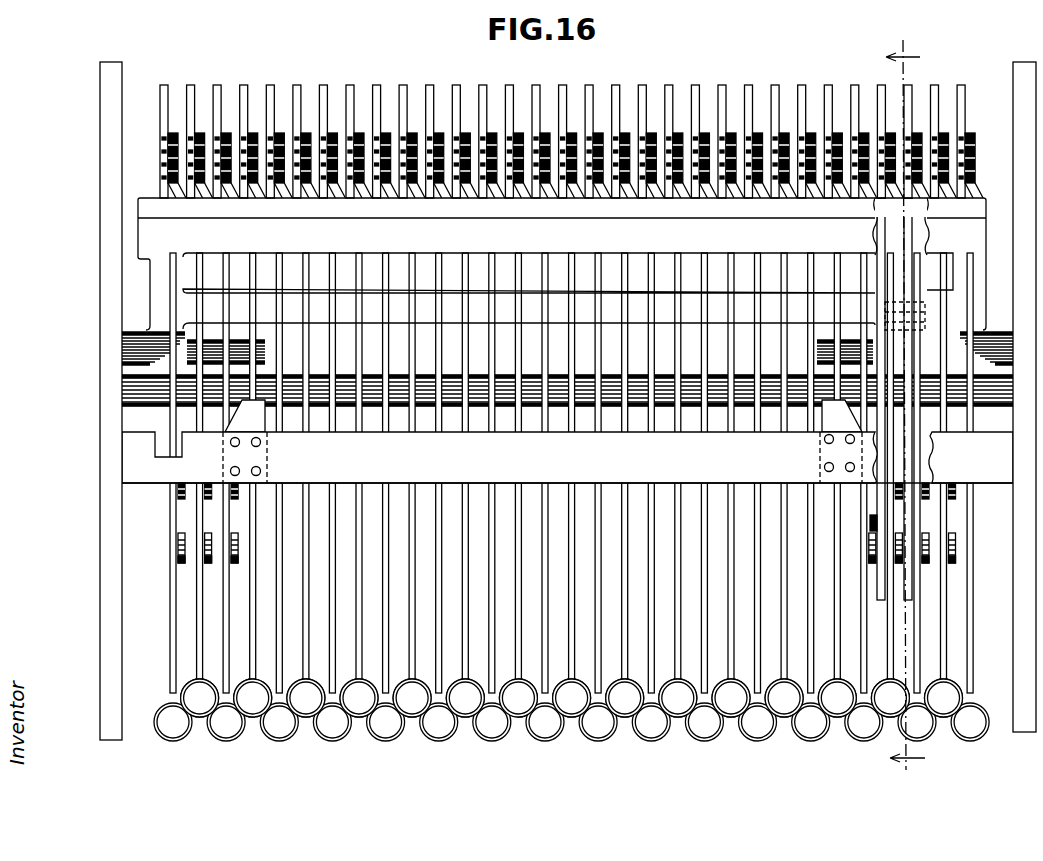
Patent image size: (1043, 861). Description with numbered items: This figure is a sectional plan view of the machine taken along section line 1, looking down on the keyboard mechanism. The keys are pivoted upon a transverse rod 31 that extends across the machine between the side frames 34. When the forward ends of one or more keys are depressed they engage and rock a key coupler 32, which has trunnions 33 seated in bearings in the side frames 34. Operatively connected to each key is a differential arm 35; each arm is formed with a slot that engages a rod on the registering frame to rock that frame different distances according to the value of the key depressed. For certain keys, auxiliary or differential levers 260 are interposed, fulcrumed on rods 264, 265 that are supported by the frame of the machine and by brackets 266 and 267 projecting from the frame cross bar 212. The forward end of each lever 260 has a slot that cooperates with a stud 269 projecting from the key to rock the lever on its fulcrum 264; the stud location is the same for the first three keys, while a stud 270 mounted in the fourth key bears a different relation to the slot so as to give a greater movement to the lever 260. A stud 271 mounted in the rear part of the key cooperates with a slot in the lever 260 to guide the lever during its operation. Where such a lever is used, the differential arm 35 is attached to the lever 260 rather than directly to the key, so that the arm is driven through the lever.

The section line 1 is at (905, 402).
The transverse rod 31 is at (150, 403).
The key coupler 32 is at (157, 233).
The trunnions 33 is at (140, 331).
The side frames 34 is at (120, 483).
The differential arm 35 is at (227, 133).
The cross bar 212 is at (583, 445).
The auxiliary or differential levers 260 is at (233, 533).
The fulcrum rod 264 is at (840, 340).
The fulcrum rod 265 is at (235, 345).
The bracket 266 is at (827, 415).
The bracket 267 is at (257, 420).
The stud 269 is at (183, 483).
The stud 270 is at (873, 522).
The stud 271 is at (920, 318).